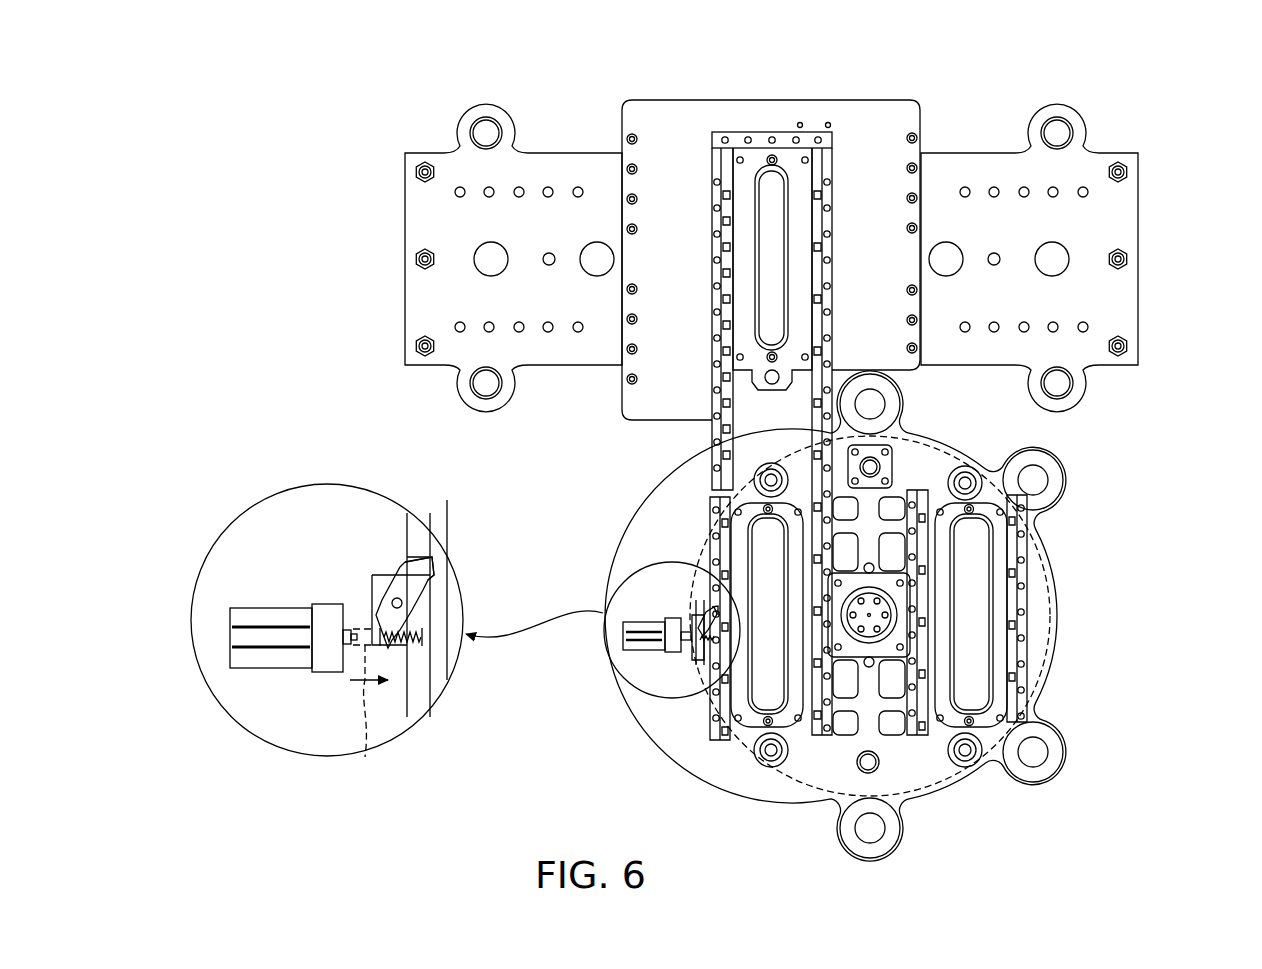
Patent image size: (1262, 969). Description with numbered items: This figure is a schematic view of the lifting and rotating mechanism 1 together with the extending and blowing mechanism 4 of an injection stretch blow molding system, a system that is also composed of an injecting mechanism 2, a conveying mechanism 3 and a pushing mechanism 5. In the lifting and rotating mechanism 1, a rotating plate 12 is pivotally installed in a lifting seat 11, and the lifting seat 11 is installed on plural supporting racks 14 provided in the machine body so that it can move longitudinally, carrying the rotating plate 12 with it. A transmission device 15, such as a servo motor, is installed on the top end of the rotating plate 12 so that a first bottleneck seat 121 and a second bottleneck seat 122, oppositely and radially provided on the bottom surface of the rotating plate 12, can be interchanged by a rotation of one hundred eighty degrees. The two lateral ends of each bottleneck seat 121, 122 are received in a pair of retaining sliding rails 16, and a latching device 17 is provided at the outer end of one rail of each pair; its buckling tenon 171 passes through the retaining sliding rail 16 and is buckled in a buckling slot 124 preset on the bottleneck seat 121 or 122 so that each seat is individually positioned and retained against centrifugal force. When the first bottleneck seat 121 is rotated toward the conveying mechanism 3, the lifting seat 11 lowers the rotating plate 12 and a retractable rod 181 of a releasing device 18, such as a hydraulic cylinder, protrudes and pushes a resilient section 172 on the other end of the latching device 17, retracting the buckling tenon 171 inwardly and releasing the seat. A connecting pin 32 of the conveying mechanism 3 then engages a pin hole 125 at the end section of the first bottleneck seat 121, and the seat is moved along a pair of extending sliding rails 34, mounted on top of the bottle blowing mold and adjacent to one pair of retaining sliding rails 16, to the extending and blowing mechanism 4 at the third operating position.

The lifting and rotating mechanism 1 is at (1060, 535).
The lifting seat 11 is at (905, 812).
The rotating plate 12 is at (1060, 640).
The first bottleneck seat 121 is at (1000, 565).
The second bottleneck seat 122 is at (768, 572).
The buckling slot 124 is at (697, 600).
The pin hole 125 is at (758, 748).
The supporting rack 14 is at (1035, 748).
The transmission device 15 is at (882, 642).
The retaining sliding rail 16 is at (700, 650).
The latching device 17 is at (697, 613).
The buckling tenon 171 is at (700, 595).
The resilient section 172 is at (713, 652).
The releasing device 18 is at (648, 643).
The retractable rod 181 is at (667, 650).
The injecting mechanism 2 is at (1030, 652).
The conveying mechanism 3 is at (714, 452).
The connecting pin 32 is at (735, 740).
The extending sliding rail 34 is at (714, 215).
The extending and blowing mechanism 4 is at (778, 195).
The pushing mechanism 5 is at (740, 535).